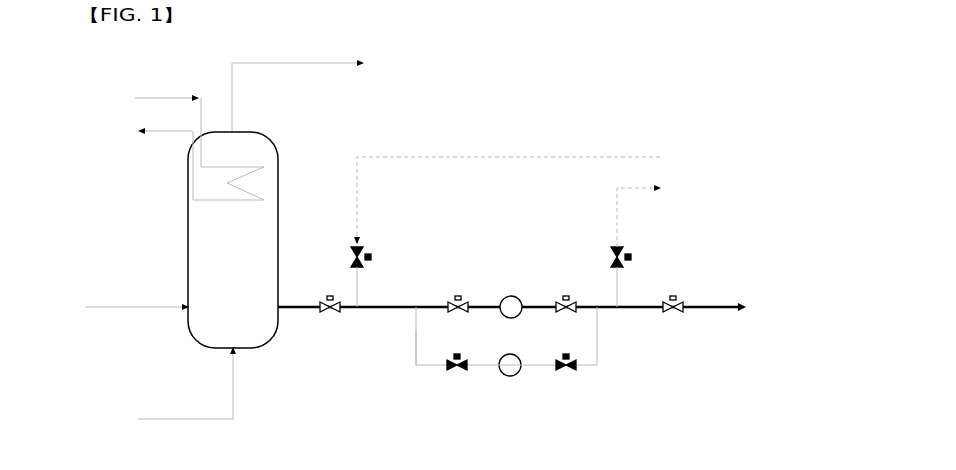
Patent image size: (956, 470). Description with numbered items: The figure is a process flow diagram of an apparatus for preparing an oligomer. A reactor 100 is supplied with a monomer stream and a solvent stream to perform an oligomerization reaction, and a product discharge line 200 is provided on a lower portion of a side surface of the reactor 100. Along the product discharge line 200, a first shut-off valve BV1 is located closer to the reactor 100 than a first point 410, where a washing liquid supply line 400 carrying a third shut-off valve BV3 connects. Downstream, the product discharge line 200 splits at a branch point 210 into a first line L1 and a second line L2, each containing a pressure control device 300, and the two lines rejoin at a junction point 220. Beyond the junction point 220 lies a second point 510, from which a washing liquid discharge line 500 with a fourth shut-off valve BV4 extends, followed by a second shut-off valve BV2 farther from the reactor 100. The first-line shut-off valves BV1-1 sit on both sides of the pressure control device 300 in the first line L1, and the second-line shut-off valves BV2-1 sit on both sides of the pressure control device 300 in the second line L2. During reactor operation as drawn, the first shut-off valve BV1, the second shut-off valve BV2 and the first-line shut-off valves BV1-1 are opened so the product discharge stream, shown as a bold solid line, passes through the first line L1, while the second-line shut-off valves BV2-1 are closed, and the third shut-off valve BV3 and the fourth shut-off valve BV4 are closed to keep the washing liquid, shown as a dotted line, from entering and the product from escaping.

The reactor 100 is at (233, 223).
The product discharge line 200 is at (720, 321).
The branch point 210 is at (413, 312).
The junction point 220 is at (601, 311).
The pressure control device 300 is at (511, 296).
The washing liquid supply line 400 is at (512, 157).
The first point 410 is at (357, 303).
The washing liquid discharge line 500 is at (643, 187).
The second point 510 is at (620, 305).
The first shut-off valve BV1 is at (334, 318).
The second shut-off valve BV2 is at (674, 318).
The third shut-off valve BV3 is at (366, 253).
The fourth shut-off valve BV4 is at (627, 250).
The 1-1-th shut-off valve BV1-1 is at (458, 297).
The 2-1-th shut-off valve BV2-1 is at (462, 375).
The first line L1 is at (428, 327).
The second line L2 is at (506, 359).